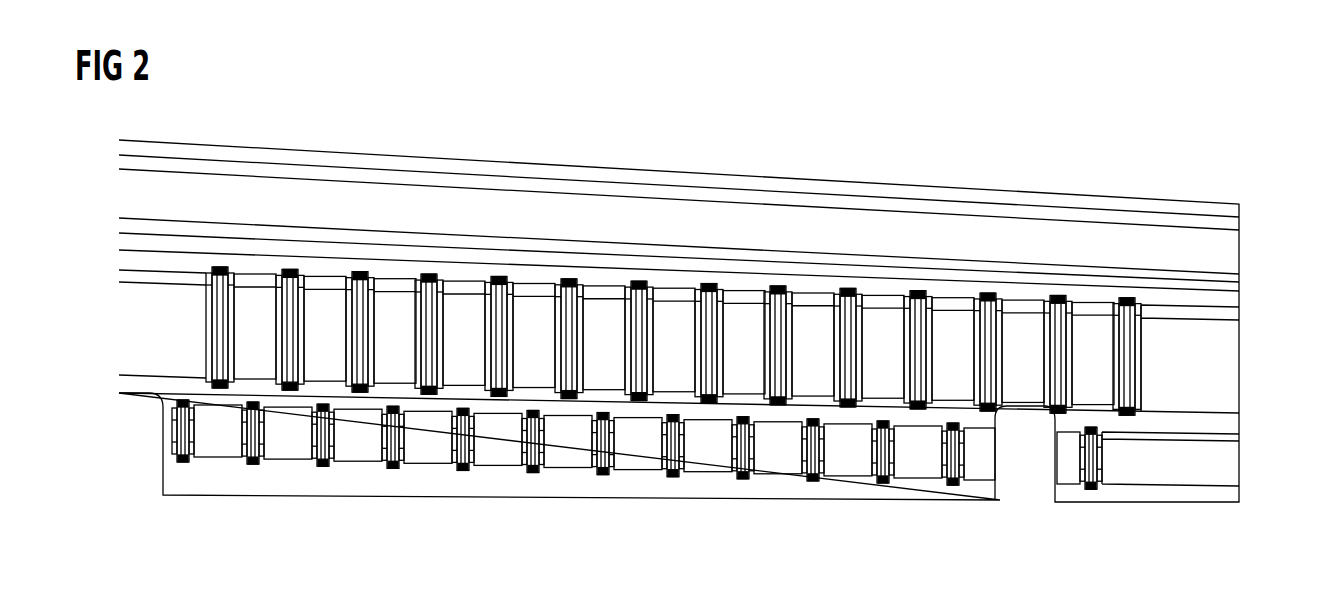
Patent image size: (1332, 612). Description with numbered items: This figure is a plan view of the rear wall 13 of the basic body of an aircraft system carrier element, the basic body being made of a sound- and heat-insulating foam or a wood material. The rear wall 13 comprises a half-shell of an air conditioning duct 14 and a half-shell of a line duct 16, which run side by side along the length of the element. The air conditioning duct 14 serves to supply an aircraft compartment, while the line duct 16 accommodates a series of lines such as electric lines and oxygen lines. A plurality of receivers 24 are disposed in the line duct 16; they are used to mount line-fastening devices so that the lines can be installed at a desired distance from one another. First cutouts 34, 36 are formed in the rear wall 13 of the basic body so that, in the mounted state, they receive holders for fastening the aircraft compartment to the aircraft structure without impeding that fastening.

The rear wall 13 is at (119, 141).
The air conditioning duct 14 is at (1250, 254).
The line duct 16 is at (1250, 365).
The receivers 24 is at (232, 317).
The first cutout 34 is at (162, 437).
The first cutout 36 is at (997, 478).